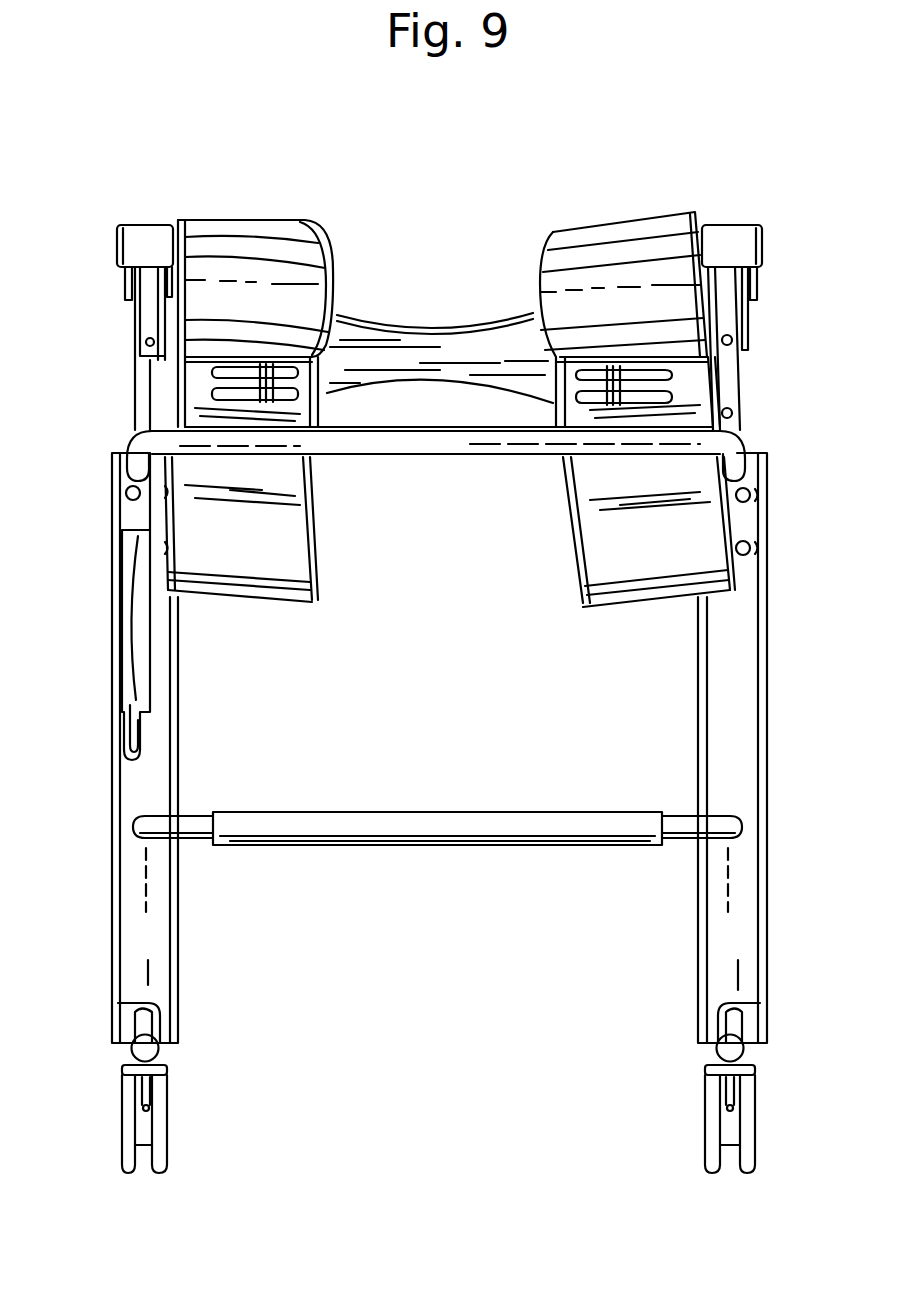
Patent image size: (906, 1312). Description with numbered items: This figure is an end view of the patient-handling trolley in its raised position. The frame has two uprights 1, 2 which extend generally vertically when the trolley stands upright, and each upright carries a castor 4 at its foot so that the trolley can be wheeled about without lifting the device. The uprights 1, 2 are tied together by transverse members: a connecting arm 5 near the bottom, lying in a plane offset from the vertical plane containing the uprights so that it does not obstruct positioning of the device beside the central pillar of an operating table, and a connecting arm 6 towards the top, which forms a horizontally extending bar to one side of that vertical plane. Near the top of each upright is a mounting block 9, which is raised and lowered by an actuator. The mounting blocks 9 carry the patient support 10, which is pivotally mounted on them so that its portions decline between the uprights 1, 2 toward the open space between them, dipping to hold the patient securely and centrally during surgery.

The upright 1 is at (768, 758).
The upright 2 is at (112, 785).
The castor 4 is at (122, 1140).
The connecting arm 5 is at (475, 843).
The connecting arm 6 is at (422, 445).
The mounting block 9 is at (127, 240).
The patient support 10 is at (248, 220).